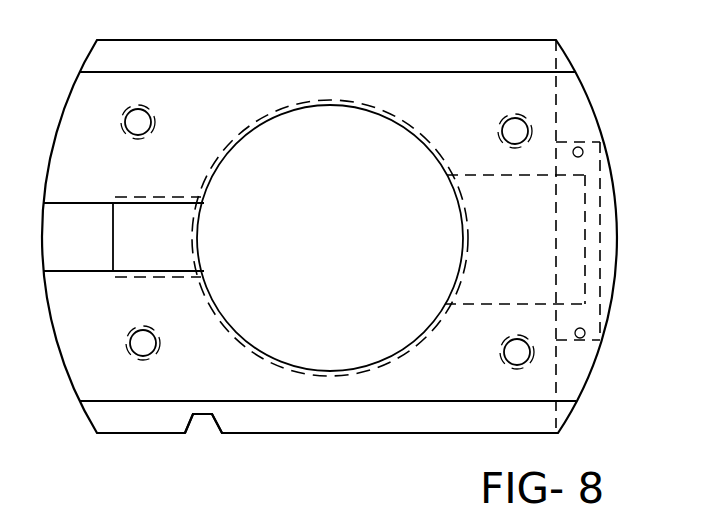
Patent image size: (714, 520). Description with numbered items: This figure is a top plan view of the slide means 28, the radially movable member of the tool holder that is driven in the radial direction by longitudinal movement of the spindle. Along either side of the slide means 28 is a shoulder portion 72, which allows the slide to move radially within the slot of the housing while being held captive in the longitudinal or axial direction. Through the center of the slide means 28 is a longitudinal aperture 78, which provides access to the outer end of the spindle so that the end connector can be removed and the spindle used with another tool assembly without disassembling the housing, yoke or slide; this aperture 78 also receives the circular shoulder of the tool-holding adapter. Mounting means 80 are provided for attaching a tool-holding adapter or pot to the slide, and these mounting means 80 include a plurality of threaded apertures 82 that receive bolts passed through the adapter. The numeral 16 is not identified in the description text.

The bore 16 is at (380, 362).
The slide means 28 is at (62, 390).
The shoulder portion 72 is at (228, 40).
The longitudinal aperture 78 is at (252, 127).
The mounting means 80 is at (134, 110).
The threaded apertures 82 is at (518, 132).